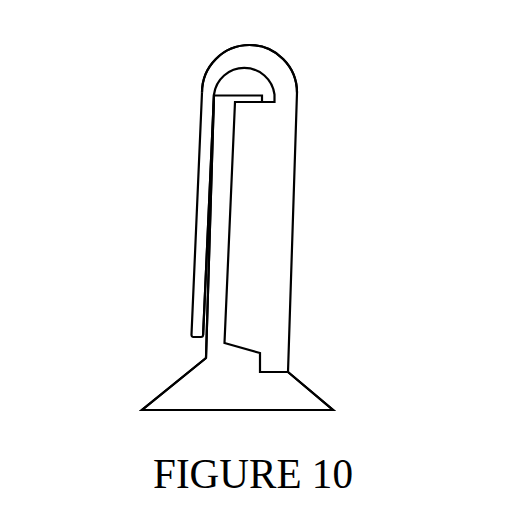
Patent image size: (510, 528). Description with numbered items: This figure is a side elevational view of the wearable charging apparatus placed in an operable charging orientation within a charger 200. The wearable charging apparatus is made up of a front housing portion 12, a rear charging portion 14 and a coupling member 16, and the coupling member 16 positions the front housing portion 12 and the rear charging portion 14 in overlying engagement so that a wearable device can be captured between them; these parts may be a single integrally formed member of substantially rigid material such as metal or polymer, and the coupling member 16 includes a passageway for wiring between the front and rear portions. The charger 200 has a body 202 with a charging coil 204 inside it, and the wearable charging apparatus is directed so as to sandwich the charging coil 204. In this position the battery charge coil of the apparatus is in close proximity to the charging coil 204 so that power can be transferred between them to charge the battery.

The front housing portion 12 is at (292, 223).
The rear charging portion 14 is at (176, 132).
The coupling member 16 is at (313, 44).
The charger 200 is at (147, 389).
The body 202 is at (196, 254).
The charging coil 204 is at (210, 208).